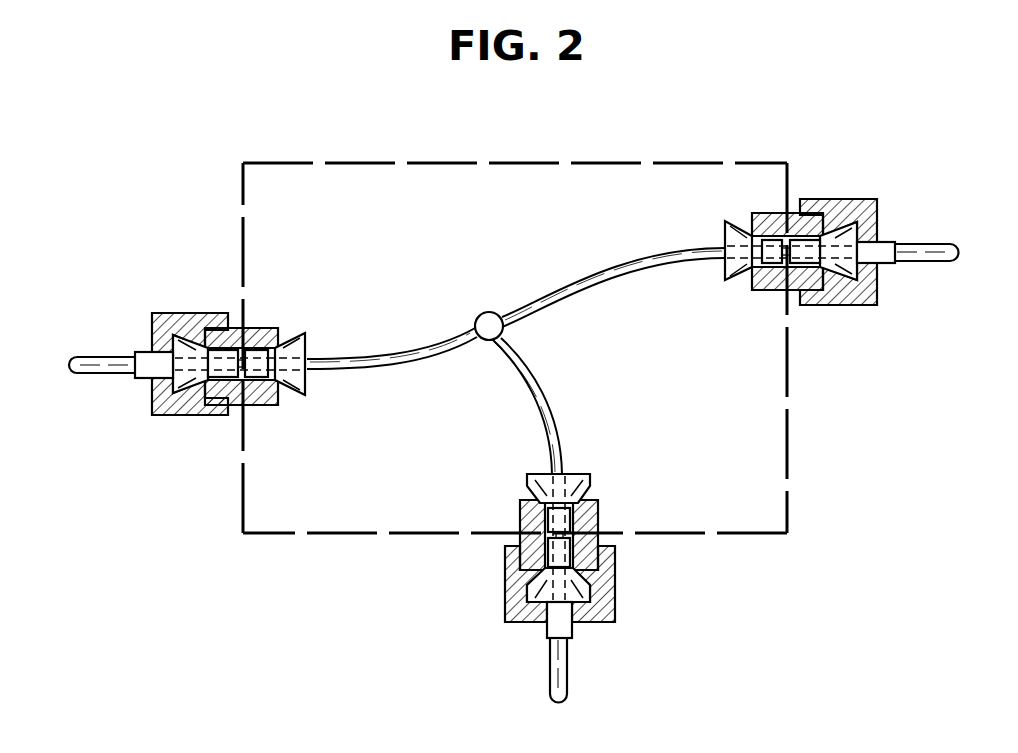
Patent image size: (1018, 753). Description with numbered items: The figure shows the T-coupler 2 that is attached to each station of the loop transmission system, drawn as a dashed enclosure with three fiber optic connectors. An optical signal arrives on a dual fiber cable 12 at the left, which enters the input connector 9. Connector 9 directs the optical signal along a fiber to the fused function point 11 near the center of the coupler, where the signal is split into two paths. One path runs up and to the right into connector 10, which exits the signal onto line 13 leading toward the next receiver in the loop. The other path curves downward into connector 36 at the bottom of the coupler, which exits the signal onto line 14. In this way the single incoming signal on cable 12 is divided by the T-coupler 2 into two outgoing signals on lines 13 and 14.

The T-coupler 2 is at (238, 178).
The connector 9 is at (186, 312).
The connector 10 is at (845, 306).
The fused function point 11 is at (481, 313).
The dual fiber cable 12 is at (97, 357).
The line 13 is at (937, 262).
The line 14 is at (568, 690).
The connector 36 is at (616, 598).